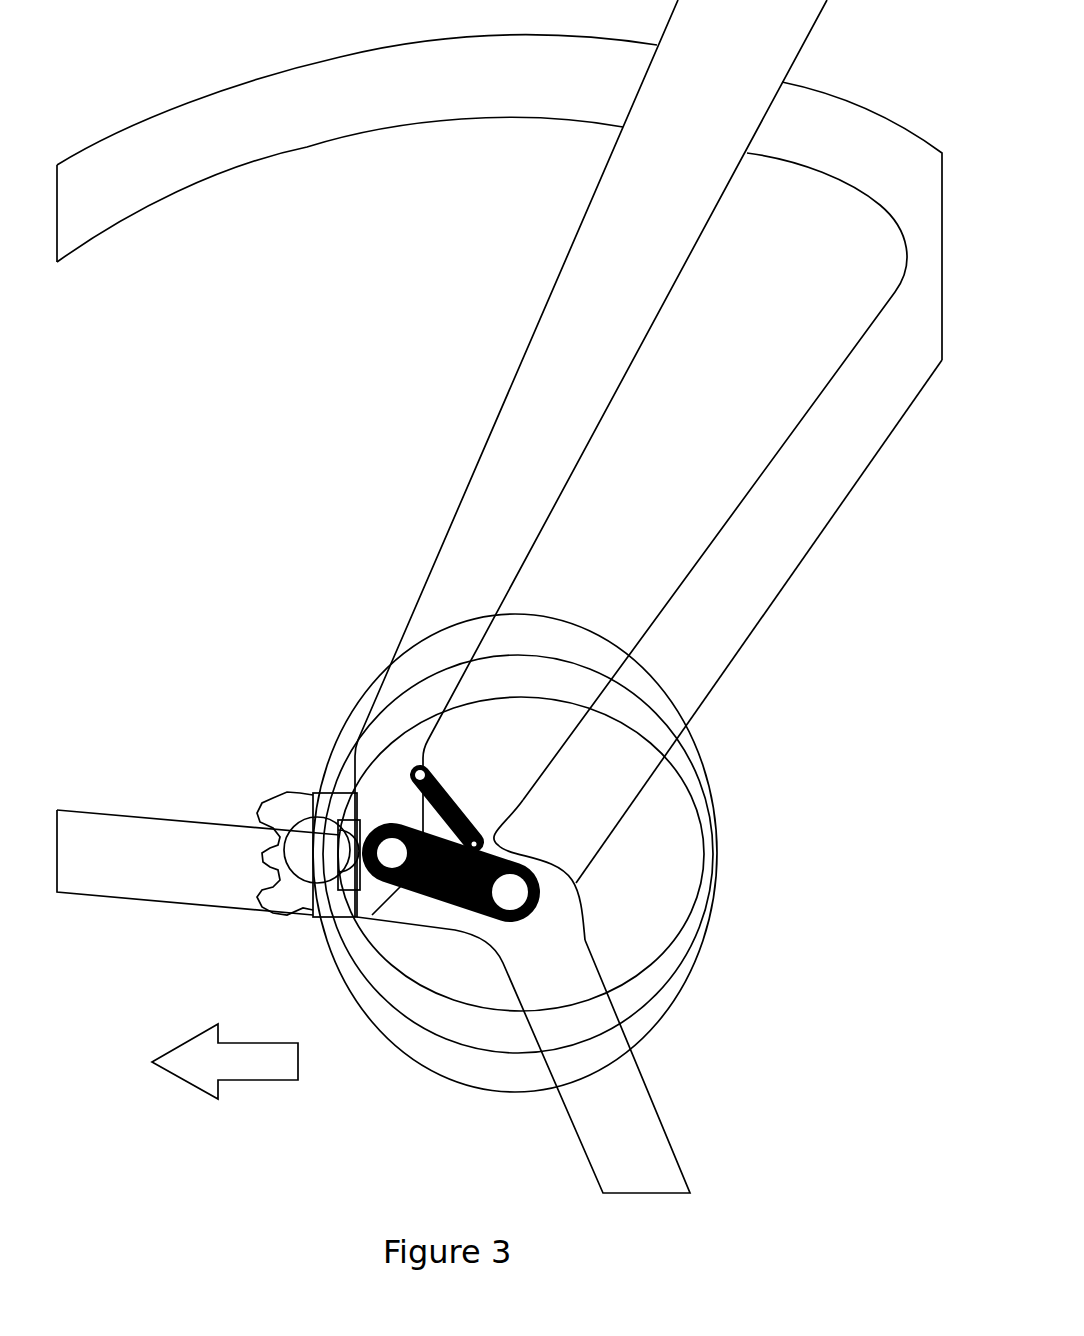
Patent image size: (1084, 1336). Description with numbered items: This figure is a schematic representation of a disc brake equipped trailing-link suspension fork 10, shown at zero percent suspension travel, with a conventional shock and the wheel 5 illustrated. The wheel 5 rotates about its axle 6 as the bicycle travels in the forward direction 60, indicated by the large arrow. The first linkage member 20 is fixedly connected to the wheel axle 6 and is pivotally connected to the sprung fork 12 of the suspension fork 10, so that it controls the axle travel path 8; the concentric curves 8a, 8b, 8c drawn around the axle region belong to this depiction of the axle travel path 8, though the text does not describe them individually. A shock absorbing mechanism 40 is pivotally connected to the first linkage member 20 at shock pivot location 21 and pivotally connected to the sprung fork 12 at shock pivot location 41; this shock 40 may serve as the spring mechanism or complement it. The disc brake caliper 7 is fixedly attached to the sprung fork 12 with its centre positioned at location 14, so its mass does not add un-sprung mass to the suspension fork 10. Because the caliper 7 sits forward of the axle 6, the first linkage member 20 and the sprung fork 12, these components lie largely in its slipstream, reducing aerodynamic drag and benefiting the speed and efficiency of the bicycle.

The wheel 5 is at (742, 572).
The axle 6 is at (519, 897).
The disc brake caliper 7 is at (288, 814).
The axle travel path 8 is at (520, 838).
The head tube position 8a is at (508, 1096).
The head tube position 8b is at (537, 1058).
The head tube position 8c is at (550, 1017).
The trailing-link suspension fork 10 is at (618, 267).
The sprung fork 12 is at (510, 492).
The location 14 is at (315, 850).
The first linkage member 20 is at (437, 888).
The shock pivot location 21 is at (483, 843).
The shock absorbing mechanism 40 is at (455, 793).
The shock pivot location 41 is at (432, 762).
The forward direction 60 is at (195, 1062).